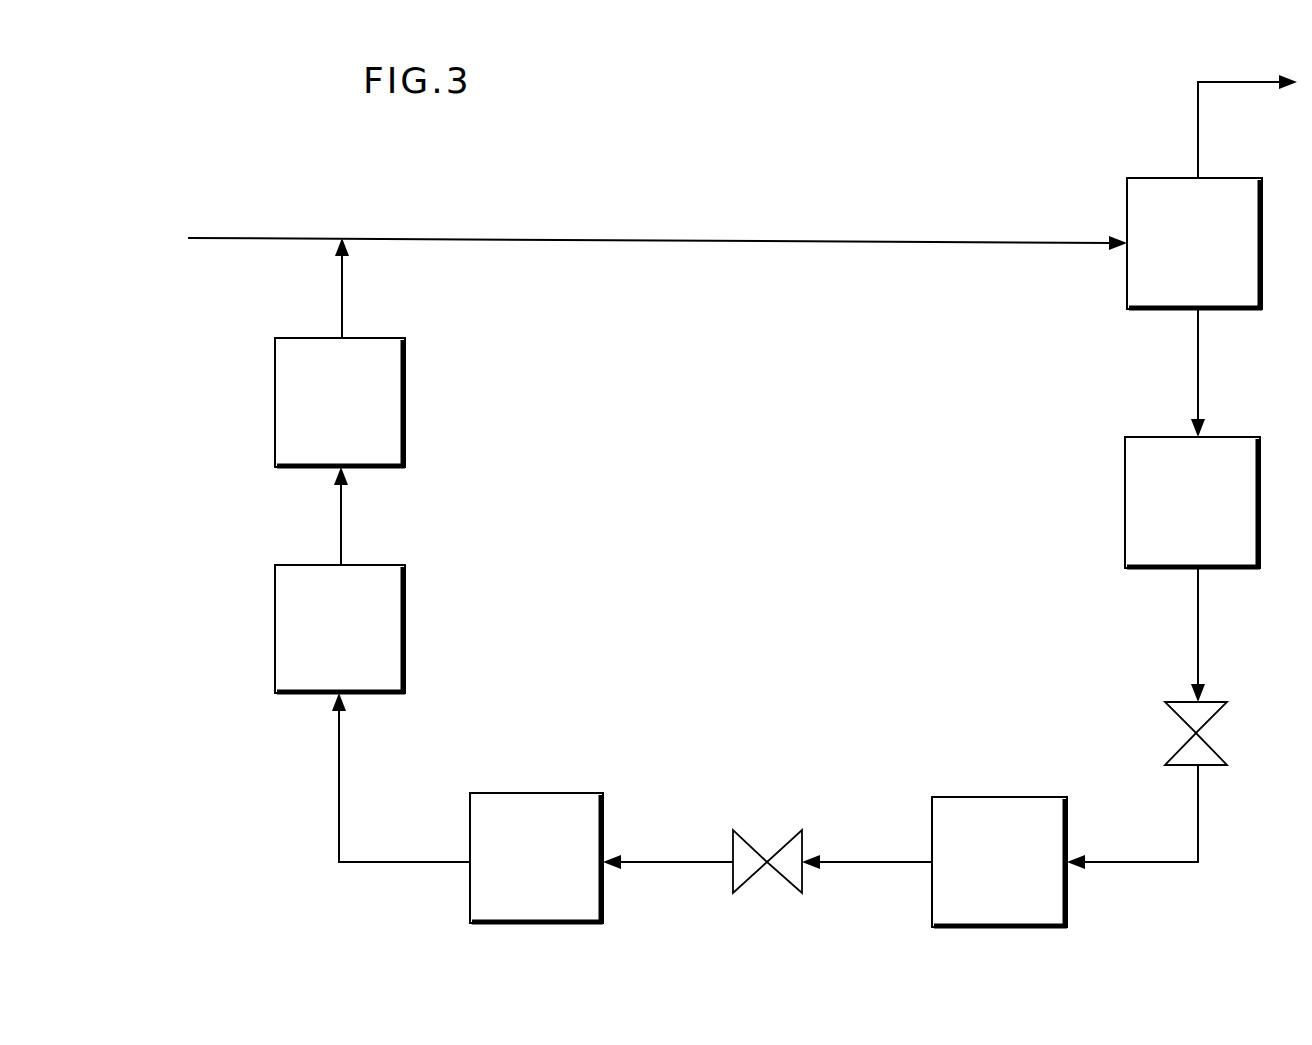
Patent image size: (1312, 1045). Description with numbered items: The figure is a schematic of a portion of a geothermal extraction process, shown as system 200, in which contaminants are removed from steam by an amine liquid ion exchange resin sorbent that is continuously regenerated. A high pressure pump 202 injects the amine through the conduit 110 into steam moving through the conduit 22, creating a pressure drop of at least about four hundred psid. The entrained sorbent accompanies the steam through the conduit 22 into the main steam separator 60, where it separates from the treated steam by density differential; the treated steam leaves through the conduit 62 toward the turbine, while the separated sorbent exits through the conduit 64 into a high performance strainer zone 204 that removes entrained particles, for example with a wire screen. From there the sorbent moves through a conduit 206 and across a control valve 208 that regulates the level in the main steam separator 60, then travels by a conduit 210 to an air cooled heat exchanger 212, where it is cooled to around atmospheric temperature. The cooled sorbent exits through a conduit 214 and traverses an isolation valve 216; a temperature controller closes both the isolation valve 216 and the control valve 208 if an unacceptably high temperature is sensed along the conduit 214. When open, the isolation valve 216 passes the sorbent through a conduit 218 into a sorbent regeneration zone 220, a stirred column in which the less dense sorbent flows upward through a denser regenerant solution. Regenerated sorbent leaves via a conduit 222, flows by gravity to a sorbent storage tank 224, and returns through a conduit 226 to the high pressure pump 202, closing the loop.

The system 200 is at (888, 112).
The conduit 22 is at (618, 240).
The main steam separator 60 is at (1212, 261).
The conduit 62 is at (1198, 122).
The conduit 64 is at (1198, 360).
The high performance strainer zone 204 is at (1222, 517).
The conduit 206 is at (1198, 619).
The control valve 208 is at (1178, 722).
The conduit 210 is at (1138, 862).
The air cooled heat exchanger 212 is at (1021, 878).
The conduit 214 is at (867, 860).
The isolation valve 216 is at (785, 888).
The conduit 218 is at (671, 860).
The sorbent regeneration zone 220 is at (566, 875).
The conduit 222 is at (339, 771).
The sorbent storage tank 224 is at (340, 629).
The conduit 226 is at (342, 520).
The high pressure pump 202 is at (368, 415).
The conduit 110 is at (343, 296).